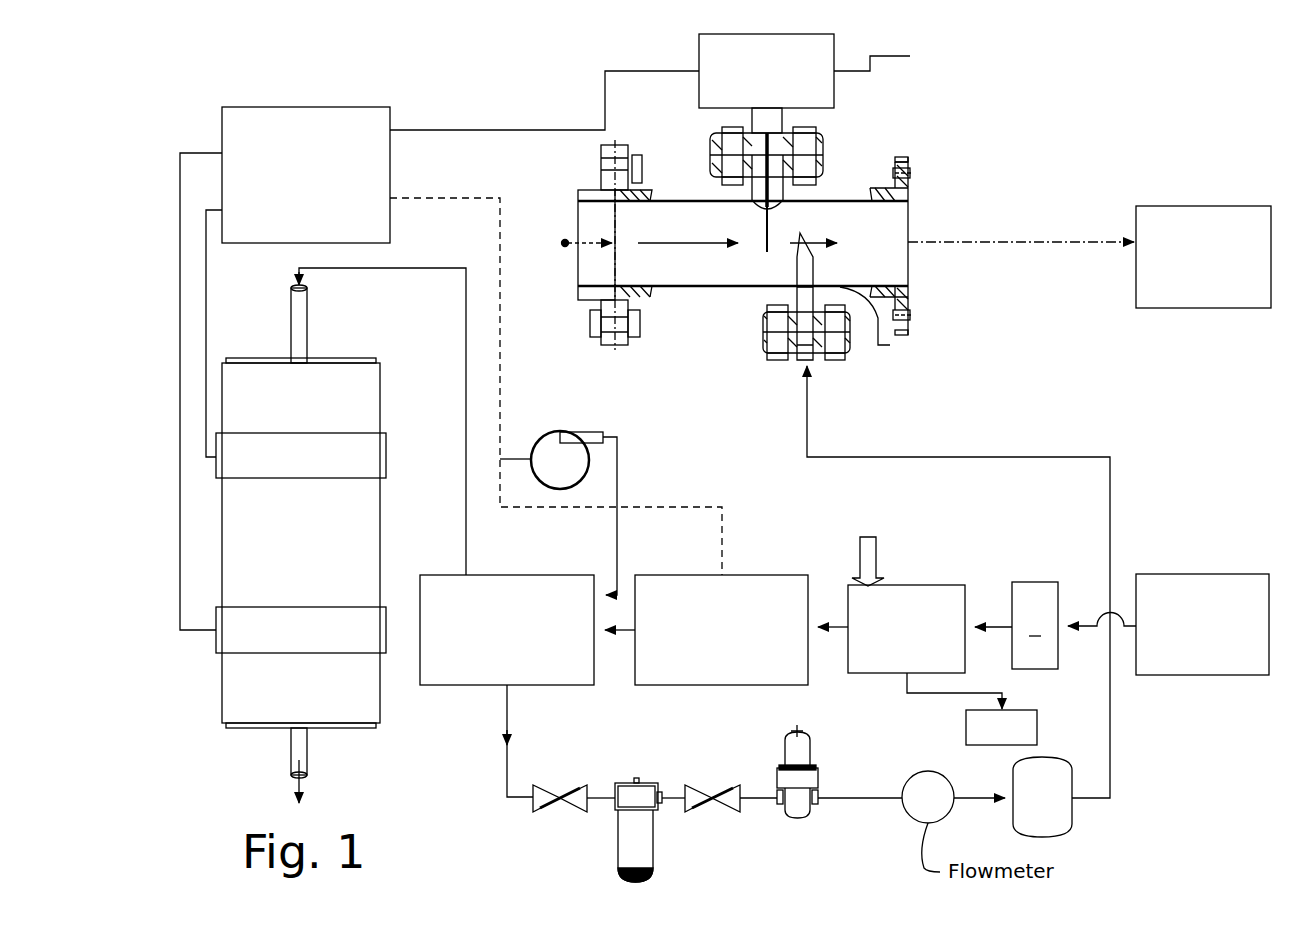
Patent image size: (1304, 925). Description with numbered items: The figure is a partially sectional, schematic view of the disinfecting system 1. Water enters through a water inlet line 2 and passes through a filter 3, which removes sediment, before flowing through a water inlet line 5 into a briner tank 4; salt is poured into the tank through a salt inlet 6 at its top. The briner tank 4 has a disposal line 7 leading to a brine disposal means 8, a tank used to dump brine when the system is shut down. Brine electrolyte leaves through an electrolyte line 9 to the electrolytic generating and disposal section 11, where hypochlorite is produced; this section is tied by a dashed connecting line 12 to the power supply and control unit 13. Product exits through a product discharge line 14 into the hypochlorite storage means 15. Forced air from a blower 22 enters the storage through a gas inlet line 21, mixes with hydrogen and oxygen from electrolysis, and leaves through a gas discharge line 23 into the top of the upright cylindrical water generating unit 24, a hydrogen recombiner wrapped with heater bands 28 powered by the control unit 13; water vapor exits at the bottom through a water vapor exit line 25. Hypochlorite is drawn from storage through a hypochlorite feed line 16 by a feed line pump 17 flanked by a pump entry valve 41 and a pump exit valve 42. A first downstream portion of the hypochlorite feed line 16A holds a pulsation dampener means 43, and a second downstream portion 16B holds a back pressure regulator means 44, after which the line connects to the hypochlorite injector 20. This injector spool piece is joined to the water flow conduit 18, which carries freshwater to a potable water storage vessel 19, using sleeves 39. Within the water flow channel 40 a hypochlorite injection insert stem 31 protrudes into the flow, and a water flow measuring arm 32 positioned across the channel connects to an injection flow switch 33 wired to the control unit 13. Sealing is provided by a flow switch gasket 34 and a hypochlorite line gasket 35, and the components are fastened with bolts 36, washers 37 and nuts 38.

The disinfecting system 1 is at (900, 96).
The water inlet line 2 is at (1068, 628).
The filter 3 is at (1035, 625).
The briner tank 4 is at (908, 585).
The water inlet line 5 is at (989, 627).
The salt inlet 6 is at (873, 543).
The disposal line 7 is at (1020, 710).
The brine disposal means 8 is at (966, 722).
The electrolyte line 9 is at (838, 628).
The electrolytic generating and disposal section 11 is at (808, 575).
The dashed connecting line 12 is at (500, 290).
The power supply and control unit 13 is at (307, 105).
The product discharge line 14 is at (617, 635).
The hypochlorite storage means 15 is at (523, 575).
The hypochlorite feed line 16 is at (509, 803).
The first downstream portion of the hypochlorite feed line 16A is at (760, 798).
The second downstream portion of the hypochlorite feed line 16B is at (867, 798).
The feed line pump 17 is at (618, 842).
The water flow conduit 18 is at (857, 200).
The potable water storage vessel 19 is at (1203, 308).
The hypochlorite injector 20 is at (764, 148).
The gas inlet line 21 is at (617, 560).
The blower 22 is at (555, 430).
The gas discharge line 23 is at (290, 325).
The water generating unit 24 is at (380, 570).
The water vapor exit line 25 is at (290, 747).
The bands 28 is at (386, 455).
The hypochlorite injection insert stem 31 is at (781, 290).
The water flow measuring arm 32 is at (758, 197).
The injection flow switch 33 is at (816, 71).
The flow switch gasket 34 is at (823, 158).
The hypochlorite line gasket 35 is at (846, 333).
The bolts 36 is at (805, 126).
The washers 37 is at (823, 137).
The nuts 38 is at (818, 180).
The sleeves 39 is at (905, 190).
The water flow channel 40 is at (879, 322).
The pump entry valve 41 is at (550, 785).
The pump exit valve 42 is at (697, 785).
The pulsation dampener means 43 is at (807, 745).
The back pressure regulator means 44 is at (1062, 832).